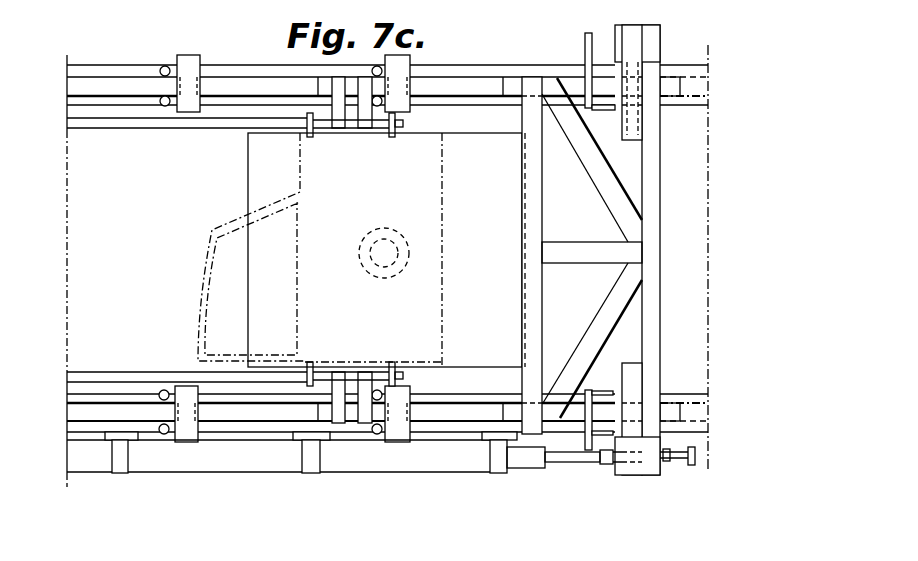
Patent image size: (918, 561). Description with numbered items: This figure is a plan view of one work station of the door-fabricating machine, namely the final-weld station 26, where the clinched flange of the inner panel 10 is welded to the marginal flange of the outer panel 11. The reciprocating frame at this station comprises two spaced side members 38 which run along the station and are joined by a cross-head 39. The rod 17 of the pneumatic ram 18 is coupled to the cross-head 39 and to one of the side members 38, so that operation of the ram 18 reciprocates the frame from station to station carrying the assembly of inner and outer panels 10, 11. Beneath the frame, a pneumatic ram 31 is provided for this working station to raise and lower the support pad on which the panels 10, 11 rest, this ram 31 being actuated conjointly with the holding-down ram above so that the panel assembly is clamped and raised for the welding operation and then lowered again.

The inner panel 10 is at (297, 247).
The outer panel 11 is at (207, 267).
The rod 17 is at (568, 455).
The pneumatic ram 18 is at (282, 457).
The final-weld station 26 is at (290, 169).
The pneumatic ram 31 is at (395, 230).
The side member 38 is at (472, 88).
The cross-head 39 is at (532, 192).